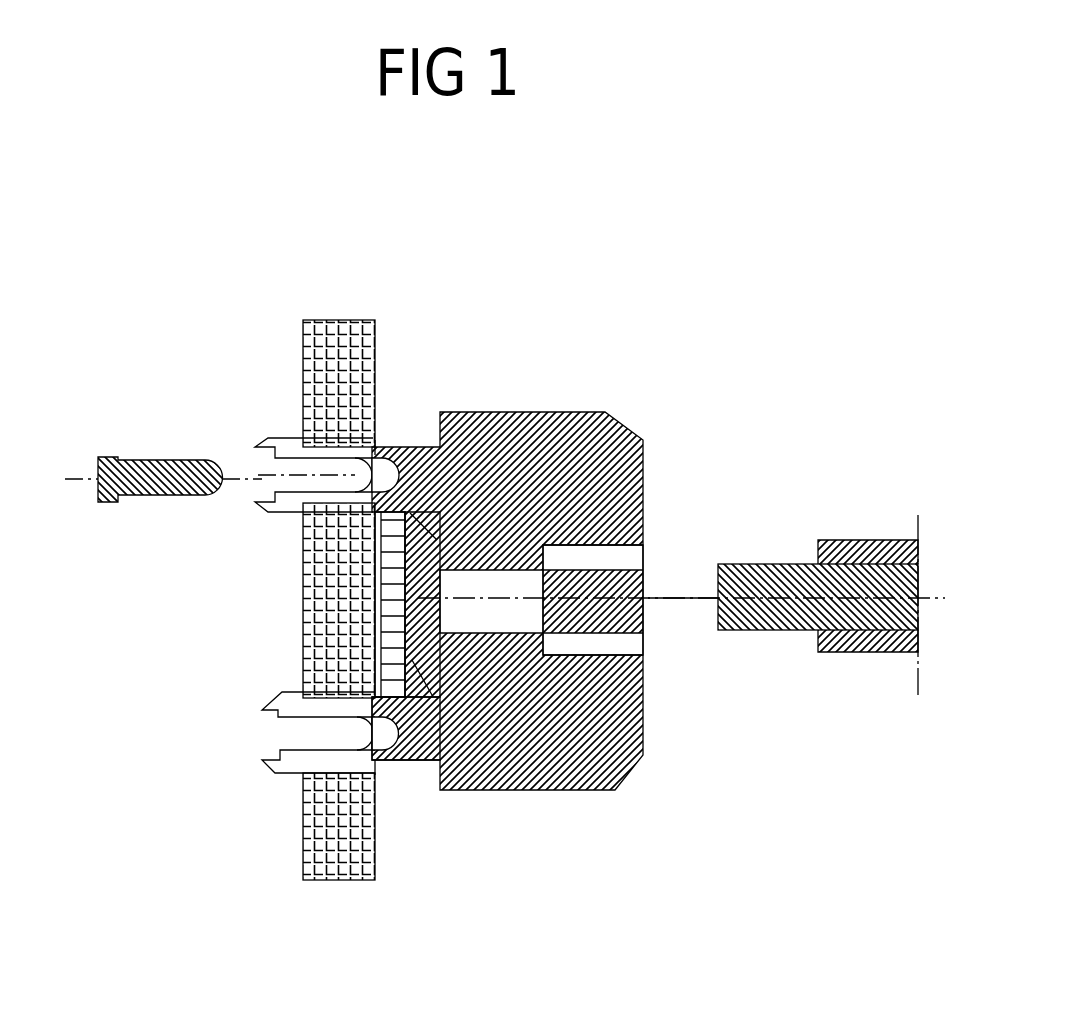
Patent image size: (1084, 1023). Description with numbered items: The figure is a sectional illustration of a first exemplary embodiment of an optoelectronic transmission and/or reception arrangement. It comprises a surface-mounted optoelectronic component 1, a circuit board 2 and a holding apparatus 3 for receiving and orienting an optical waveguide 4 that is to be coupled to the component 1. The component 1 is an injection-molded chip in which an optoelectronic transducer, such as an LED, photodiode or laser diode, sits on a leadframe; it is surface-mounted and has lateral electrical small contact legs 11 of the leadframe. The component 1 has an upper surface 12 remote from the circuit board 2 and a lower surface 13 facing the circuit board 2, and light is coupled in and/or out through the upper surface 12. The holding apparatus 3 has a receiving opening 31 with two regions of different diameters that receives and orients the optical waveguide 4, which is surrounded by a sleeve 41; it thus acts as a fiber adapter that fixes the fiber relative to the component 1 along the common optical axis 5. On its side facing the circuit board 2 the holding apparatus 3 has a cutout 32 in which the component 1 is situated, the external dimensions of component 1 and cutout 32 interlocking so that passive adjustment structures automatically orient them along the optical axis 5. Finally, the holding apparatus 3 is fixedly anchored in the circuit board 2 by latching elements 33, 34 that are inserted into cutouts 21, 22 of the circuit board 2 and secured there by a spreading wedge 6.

The surface-mounted optoelectronic component 1 is at (405, 628).
The circuit board 2 is at (370, 344).
The holding apparatus 3 is at (618, 428).
The optical waveguide 4 is at (760, 632).
The optical axis 5 is at (677, 600).
The spreading wedge 6 is at (148, 458).
The contact legs 11 is at (390, 572).
The upper surface 12 is at (427, 540).
The lower surface 13 is at (426, 697).
The cutout 21 is at (378, 446).
The cutout 22 is at (381, 765).
The receiving opening 31 is at (645, 548).
The cutout 32 is at (428, 702).
The latching element 33 is at (290, 505).
The latching element 34 is at (350, 708).
The sleeve 41 is at (850, 652).